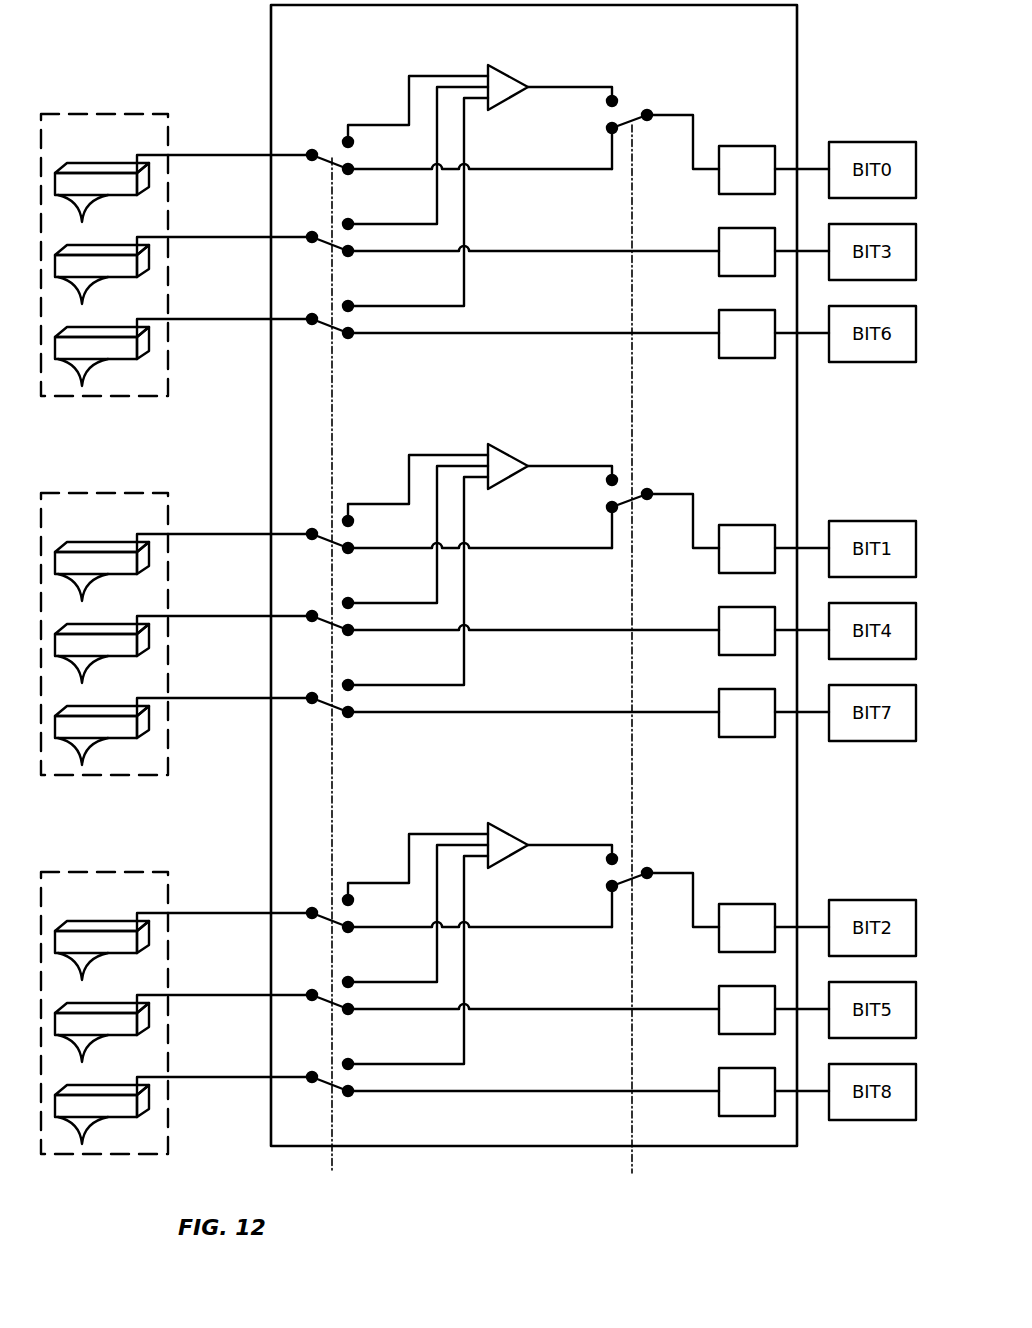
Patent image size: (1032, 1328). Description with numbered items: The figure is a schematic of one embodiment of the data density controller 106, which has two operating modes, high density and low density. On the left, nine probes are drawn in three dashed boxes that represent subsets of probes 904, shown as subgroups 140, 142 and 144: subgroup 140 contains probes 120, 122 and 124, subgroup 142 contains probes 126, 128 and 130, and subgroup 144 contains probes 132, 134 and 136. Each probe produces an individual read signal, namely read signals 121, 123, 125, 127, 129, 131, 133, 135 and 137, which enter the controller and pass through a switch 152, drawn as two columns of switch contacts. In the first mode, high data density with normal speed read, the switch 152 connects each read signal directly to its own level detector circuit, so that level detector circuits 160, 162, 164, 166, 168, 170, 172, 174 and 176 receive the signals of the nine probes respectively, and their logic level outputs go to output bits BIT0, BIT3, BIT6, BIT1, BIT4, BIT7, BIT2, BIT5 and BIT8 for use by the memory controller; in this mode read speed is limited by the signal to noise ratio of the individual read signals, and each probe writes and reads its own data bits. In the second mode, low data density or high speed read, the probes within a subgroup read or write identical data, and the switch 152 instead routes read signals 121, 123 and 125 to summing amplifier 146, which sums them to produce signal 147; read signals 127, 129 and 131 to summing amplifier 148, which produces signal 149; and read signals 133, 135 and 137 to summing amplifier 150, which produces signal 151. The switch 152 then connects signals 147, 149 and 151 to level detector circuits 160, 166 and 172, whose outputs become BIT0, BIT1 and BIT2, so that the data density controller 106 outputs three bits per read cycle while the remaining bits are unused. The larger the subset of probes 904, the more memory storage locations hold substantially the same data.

The data density controller 106 is at (591, 36).
The subset of probes 904 is at (83, 104).
The subgroup 140 is at (79, 144).
The subgroup 142 is at (79, 523).
The subgroup 144 is at (79, 902).
The probe 120 is at (83, 193).
The probe 122 is at (83, 275).
The probe 124 is at (83, 357).
The probe 126 is at (83, 572).
The probe 128 is at (83, 654).
The probe 130 is at (83, 736).
The probe 132 is at (83, 951).
The probe 134 is at (83, 1033).
The probe 136 is at (83, 1115).
The read signal 121 is at (222, 154).
The read signal 123 is at (222, 236).
The read signal 125 is at (222, 318).
The read signal 127 is at (222, 533).
The read signal 129 is at (222, 615).
The read signal 131 is at (222, 697).
The read signal 133 is at (222, 912).
The read signal 135 is at (222, 994).
The read signal 137 is at (222, 1076).
The summing amplifier 146 is at (510, 100).
The summing amplifier 148 is at (510, 479).
The summing amplifier 150 is at (510, 858).
The signal 147 is at (568, 87).
The signal 149 is at (562, 466).
The signal 151 is at (564, 845).
The level detector circuit 160 is at (731, 178).
The level detector circuit 162 is at (731, 260).
The level detector circuit 164 is at (731, 342).
The level detector circuit 166 is at (731, 557).
The level detector circuit 168 is at (731, 639).
The level detector circuit 170 is at (731, 721).
The level detector circuit 172 is at (731, 936).
The level detector circuit 174 is at (731, 1018).
The level detector circuit 176 is at (731, 1100).
The switch 152 is at (632, 1190).